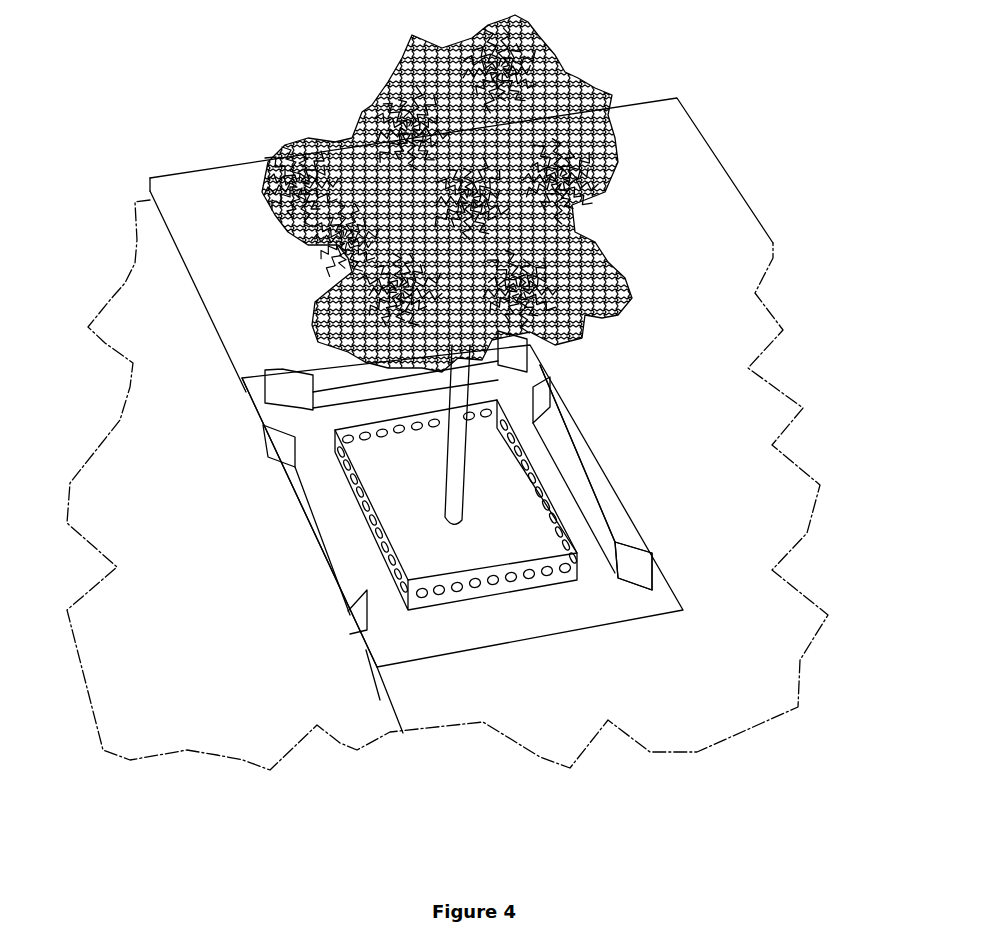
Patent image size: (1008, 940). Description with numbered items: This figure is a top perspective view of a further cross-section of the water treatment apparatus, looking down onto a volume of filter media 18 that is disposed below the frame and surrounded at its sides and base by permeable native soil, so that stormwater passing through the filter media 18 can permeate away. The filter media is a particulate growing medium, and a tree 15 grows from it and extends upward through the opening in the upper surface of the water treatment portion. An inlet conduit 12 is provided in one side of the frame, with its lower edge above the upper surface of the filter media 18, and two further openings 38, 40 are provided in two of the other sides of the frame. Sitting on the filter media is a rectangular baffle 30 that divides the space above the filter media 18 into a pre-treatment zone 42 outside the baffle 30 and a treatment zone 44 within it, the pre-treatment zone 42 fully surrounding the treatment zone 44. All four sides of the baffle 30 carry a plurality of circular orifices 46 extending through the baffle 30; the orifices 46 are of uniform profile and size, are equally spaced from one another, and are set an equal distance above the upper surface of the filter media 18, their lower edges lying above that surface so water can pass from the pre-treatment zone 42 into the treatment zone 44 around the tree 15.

The inlet conduit 12 is at (293, 487).
The tree 15 is at (463, 447).
The filter media 18 is at (592, 570).
The baffle 30 is at (518, 592).
The opening 38 is at (327, 373).
The opening 40 is at (578, 478).
The pre-treatment zone 42 is at (352, 523).
The treatment zone 44 is at (422, 523).
The orifices 46 is at (547, 580).